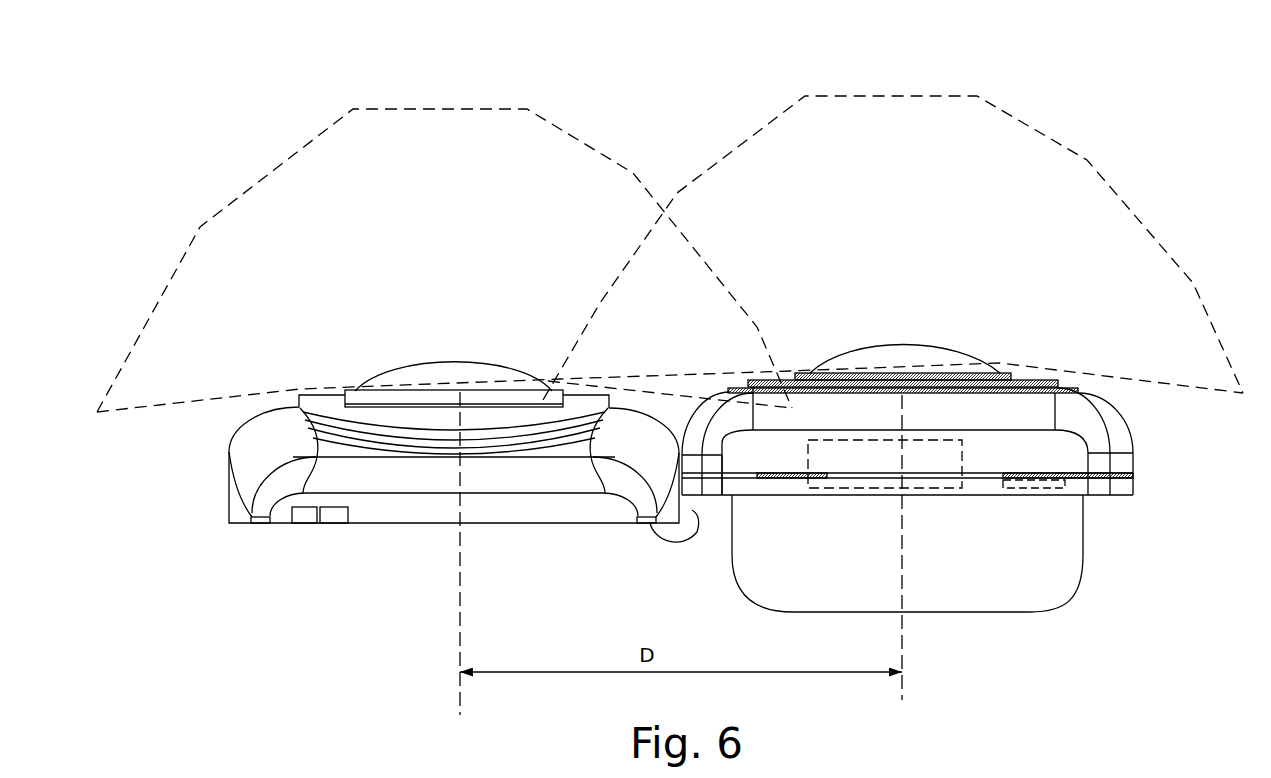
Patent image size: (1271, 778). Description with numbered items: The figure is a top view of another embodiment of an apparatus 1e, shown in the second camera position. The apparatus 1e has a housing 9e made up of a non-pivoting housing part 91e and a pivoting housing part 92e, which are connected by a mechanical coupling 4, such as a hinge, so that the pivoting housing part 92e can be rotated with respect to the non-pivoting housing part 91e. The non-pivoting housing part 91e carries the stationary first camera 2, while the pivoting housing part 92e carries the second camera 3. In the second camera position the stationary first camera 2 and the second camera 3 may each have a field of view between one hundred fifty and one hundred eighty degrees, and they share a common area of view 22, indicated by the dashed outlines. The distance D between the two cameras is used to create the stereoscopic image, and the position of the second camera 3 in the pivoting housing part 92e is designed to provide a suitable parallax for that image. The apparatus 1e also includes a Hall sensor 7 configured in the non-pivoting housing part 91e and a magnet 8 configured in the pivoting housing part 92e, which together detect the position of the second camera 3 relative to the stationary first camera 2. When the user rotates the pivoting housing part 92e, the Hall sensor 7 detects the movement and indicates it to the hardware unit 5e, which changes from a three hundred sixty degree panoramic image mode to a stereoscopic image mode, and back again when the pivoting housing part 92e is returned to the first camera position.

The apparatus 1e is at (243, 137).
The common area of view 22 is at (668, 280).
The second camera 3 is at (436, 414).
The magnet 8 is at (303, 524).
The pivoting housing part 92e is at (398, 525).
The mechanical coupling 4 is at (693, 545).
The housing 9e is at (675, 578).
The stationary first camera 2 is at (985, 401).
The hardware unit 5e is at (907, 480).
The Hall sensor 7 is at (1027, 482).
The non-pivoting housing part 91e is at (1123, 497).